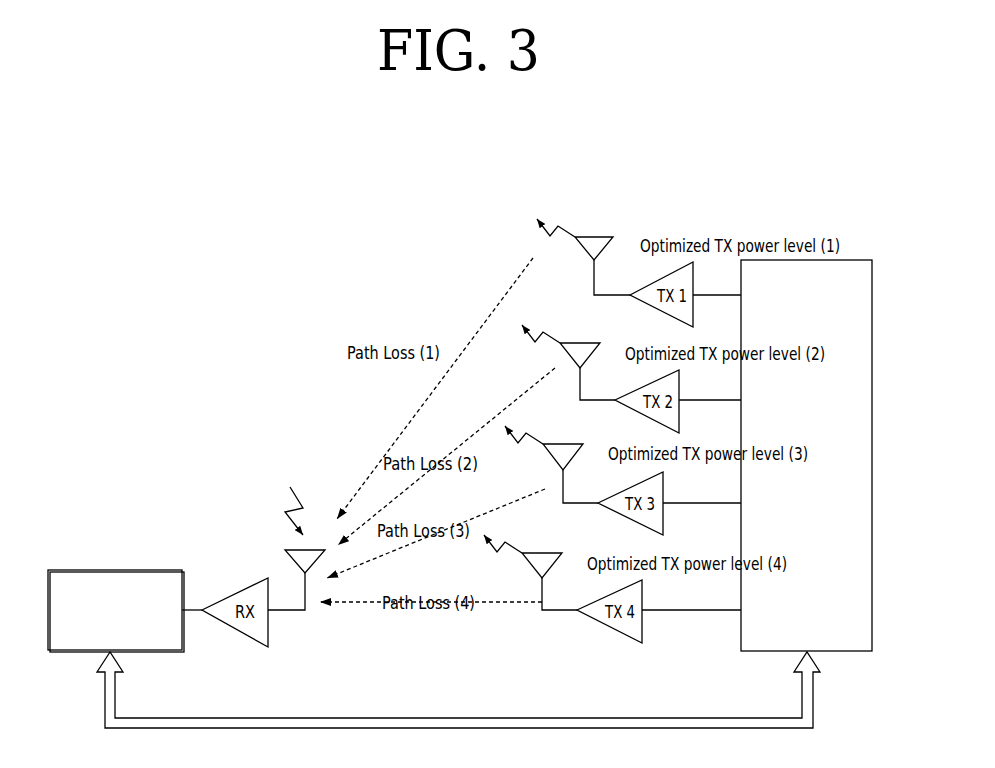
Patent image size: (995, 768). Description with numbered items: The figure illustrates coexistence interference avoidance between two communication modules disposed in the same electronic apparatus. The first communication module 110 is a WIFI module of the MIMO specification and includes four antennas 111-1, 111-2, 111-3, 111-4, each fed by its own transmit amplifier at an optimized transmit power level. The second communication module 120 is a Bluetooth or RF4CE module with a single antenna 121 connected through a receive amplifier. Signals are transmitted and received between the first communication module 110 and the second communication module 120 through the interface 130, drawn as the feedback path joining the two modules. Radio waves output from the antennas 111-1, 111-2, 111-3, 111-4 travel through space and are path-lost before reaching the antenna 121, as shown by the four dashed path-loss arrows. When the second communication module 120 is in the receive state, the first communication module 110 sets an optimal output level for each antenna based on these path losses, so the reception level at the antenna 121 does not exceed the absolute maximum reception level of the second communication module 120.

The first communication module 110 is at (754, 652).
The antenna 111-1 is at (585, 237).
The antenna 111-2 is at (570, 343).
The antenna 111-3 is at (553, 444).
The antenna 111-4 is at (532, 553).
The second communication module 120 is at (156, 570).
The antenna 121 is at (285, 550).
The interface 130 is at (449, 718).